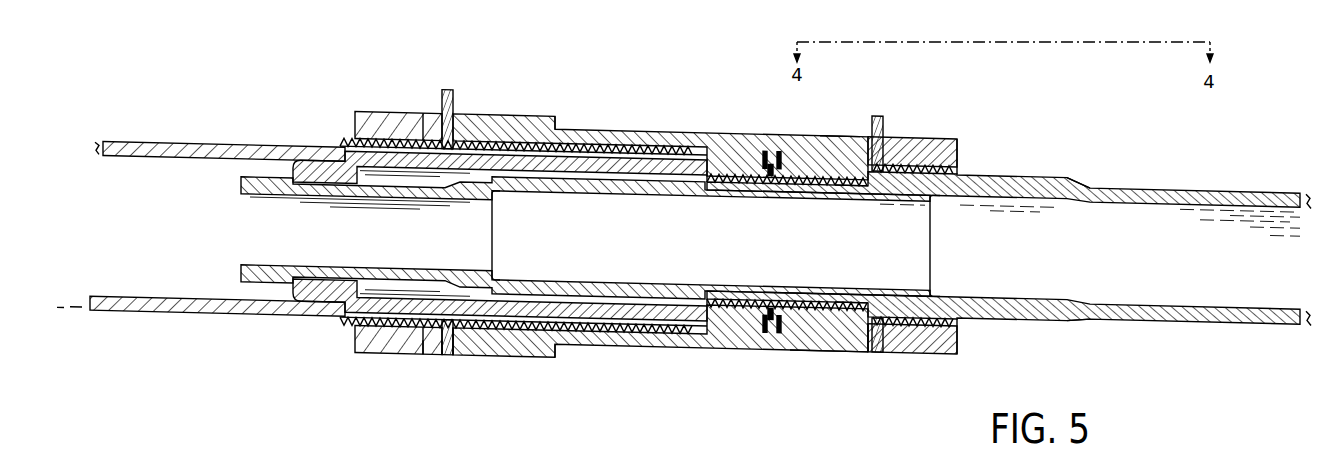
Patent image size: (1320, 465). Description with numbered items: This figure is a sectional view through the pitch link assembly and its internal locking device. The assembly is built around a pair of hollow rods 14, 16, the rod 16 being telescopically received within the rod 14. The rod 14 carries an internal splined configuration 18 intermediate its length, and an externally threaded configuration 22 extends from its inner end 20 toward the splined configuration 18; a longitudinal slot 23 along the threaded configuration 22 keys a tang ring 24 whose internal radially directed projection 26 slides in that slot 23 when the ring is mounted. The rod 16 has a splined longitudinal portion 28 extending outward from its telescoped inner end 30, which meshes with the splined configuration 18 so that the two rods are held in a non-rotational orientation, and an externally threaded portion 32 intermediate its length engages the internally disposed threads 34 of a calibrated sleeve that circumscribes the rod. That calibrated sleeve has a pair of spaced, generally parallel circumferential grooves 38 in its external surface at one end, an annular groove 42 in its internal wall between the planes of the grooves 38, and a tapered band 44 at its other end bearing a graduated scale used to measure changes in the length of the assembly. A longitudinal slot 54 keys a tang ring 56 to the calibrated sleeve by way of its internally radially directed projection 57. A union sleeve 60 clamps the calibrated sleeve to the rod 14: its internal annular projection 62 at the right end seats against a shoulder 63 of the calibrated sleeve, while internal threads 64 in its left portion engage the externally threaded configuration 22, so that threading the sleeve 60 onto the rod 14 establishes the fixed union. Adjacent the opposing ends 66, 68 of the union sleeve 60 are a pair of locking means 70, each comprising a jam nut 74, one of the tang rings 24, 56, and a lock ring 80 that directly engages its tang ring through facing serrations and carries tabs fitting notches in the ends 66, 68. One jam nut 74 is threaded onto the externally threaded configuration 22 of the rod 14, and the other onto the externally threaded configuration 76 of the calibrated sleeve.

The hollow rod 14 is at (193, 140).
The hollow rod 16 is at (1166, 189).
The splined configuration 18 is at (321, 192).
The inner end 20 is at (710, 172).
The externally threaded configuration 22 is at (341, 145).
The longitudinal slot 23 is at (651, 145).
The tang ring 24 is at (436, 357).
The internal radially directed projection 26 is at (416, 113).
The splined longitudinal portion 28 is at (243, 176).
The telescoped inner end 30 is at (243, 268).
The externally threaded portion 32 is at (838, 185).
The internally disposed threads 34 is at (870, 187).
The circumferential grooves 38 is at (779, 152).
The annular groove 42 is at (773, 175).
The tapered band 44 is at (1084, 323).
The longitudinal slot 54 is at (1046, 179).
The tang ring 56 is at (880, 357).
The internally radially directed projection 57 is at (906, 137).
The sleeve 60 is at (722, 134).
The internal annular projection 62 is at (823, 328).
The shoulder 63 is at (833, 140).
The internal threads 64 is at (607, 147).
The end 66 is at (459, 358).
The end 68 is at (862, 357).
The locking means 70 is at (462, 95).
The jam nut 74 is at (352, 114).
The externally threaded configuration 76 is at (960, 158).
The lock ring 80 is at (447, 358).